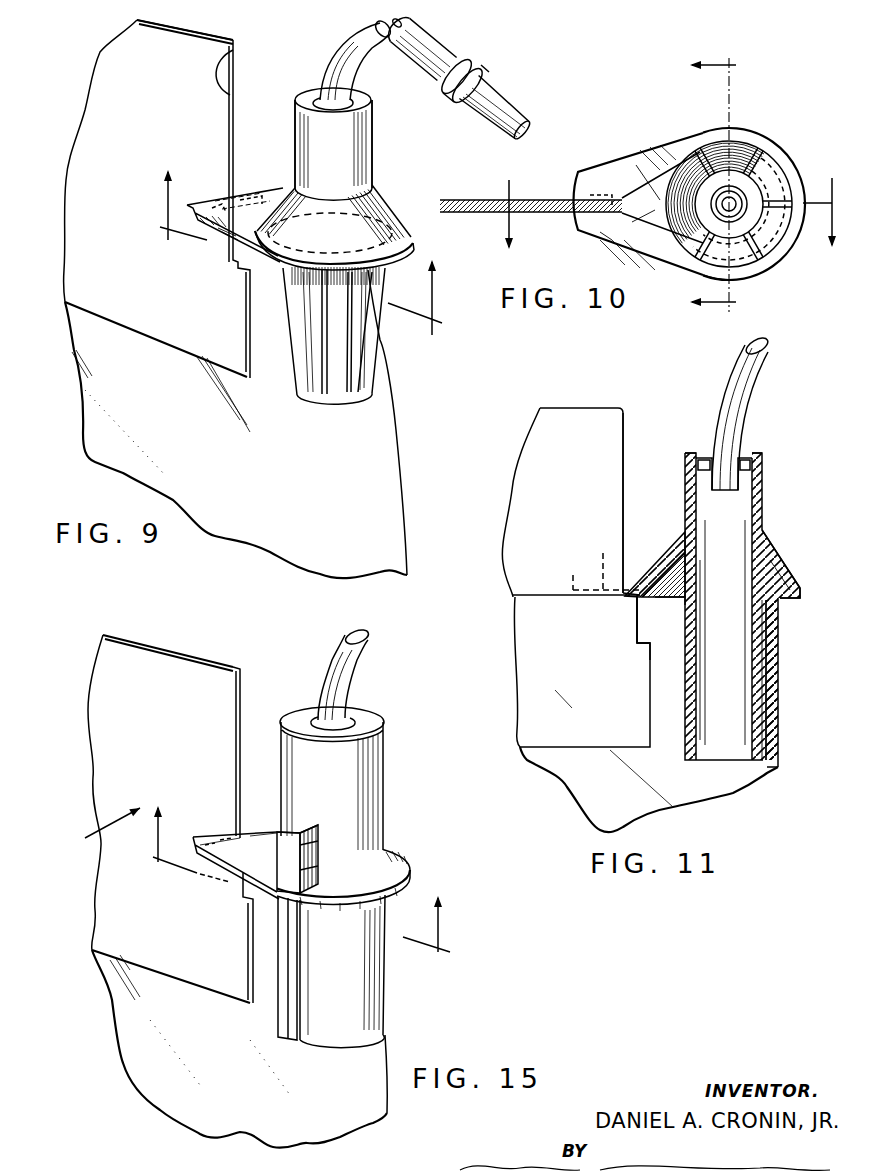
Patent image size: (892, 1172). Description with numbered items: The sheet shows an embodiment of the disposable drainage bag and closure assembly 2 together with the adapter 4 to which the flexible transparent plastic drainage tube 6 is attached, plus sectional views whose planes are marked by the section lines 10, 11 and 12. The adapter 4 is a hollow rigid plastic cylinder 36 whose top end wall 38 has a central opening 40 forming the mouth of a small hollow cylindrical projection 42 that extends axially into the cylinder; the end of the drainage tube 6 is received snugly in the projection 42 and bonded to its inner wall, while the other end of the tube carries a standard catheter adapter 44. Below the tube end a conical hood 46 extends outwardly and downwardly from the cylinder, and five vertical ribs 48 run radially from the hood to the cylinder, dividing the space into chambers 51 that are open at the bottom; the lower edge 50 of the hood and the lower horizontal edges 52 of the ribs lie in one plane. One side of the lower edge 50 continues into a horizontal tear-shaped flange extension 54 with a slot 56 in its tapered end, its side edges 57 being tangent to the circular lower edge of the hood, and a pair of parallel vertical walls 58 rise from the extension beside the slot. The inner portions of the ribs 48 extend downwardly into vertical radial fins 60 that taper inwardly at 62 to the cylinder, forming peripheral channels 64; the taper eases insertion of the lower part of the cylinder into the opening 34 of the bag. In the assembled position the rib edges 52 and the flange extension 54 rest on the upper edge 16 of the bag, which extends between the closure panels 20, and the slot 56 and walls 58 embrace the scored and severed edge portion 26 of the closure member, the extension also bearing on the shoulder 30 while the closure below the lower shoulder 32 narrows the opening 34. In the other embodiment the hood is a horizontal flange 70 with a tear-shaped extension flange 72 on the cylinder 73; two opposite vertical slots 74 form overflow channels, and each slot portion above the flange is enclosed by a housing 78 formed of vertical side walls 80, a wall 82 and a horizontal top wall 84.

In FIG. 9, the disposable drainage bag and closure assembly 2 is at (88, 52).
In FIG. 9, the adapter 4 is at (280, 143).
In FIG. 9, the drainage tube 6 is at (345, 37).
In FIG. 10, the drainage tube 6 is at (742, 200).
In FIG. 11, the drainage tube 6 is at (755, 383).
In FIG. 15, the drainage tube 6 is at (348, 668).
In FIG. 9, the section line 10— 10 is at (304, 258).
In FIG. 10, the section line 10— 10 is at (640, 165).
In FIG. 10, the section line 11— 11 is at (671, 200).
In FIG. 10, the section line 12- 12 is at (728, 182).
In FIG. 9, the upper edge of the bag 16 is at (388, 232).
In FIG. 11, the upper edge of the bag 16 is at (640, 612).
In FIG. 15, the upper edge of the bag 16 is at (269, 892).
In FIG. 9, the closure panels 20 is at (106, 79).
In FIG. 10, the closure panels 20 is at (530, 200).
In FIG. 11, the closure panels 20 is at (636, 595).
In FIG. 15, the closure panels 20 is at (223, 891).
In FIG. 9, the scored and severed edge portion 26 is at (233, 46).
In FIG. 10, the scored and severed edge portion 26 is at (605, 238).
In FIG. 11, the scored and severed edge portion 26 is at (627, 448).
In FIG. 11, the shoulder 30 is at (615, 614).
In FIG. 11, the lower shoulder 32 is at (648, 645).
In FIG. 11, the opening 34 is at (642, 625).
In FIG. 9, the cylinder 36 is at (362, 148).
In FIG. 10, the cylinder 36 is at (729, 204).
In FIG. 11, the cylinder 36 is at (764, 503).
In FIG. 9, the top end wall 38 is at (302, 102).
In FIG. 11, the top end wall 38 is at (748, 457).
In FIG. 15, the top end wall 38 is at (293, 708).
In FIG. 9, the opening 40 is at (355, 100).
In FIG. 11, the opening 40 is at (710, 462).
In FIG. 15, the opening 40 is at (355, 718).
In FIG. 11, the hollow cylindrical projection 42 is at (752, 472).
In FIG. 9, the catheter adapter 44 is at (486, 88).
In FIG. 9, the hood 46 is at (383, 208).
In FIG. 11, the hood 46 is at (765, 563).
In FIG. 10, the vertical ribs 48 is at (748, 265).
In FIG. 11, the vertical ribs 48 is at (782, 585).
In FIG. 9, the lower edge of the hood 50 is at (406, 258).
In FIG. 10, the lower edge of the hood 50 is at (757, 140).
In FIG. 10, the chambers 51 is at (731, 140).
In FIG. 10, the lower horizontal edges of the ribs 52 is at (660, 268).
In FIG. 11, the lower horizontal edges of the ribs 52 is at (798, 602).
In FIG. 9, the flange extension 54 is at (215, 222).
In FIG. 10, the flange extension 54 is at (605, 178).
In FIG. 11, the flange extension 54 is at (640, 583).
In FIG. 9, the slot 56 is at (218, 193).
In FIG. 10, the slot 56 is at (598, 195).
In FIG. 11, the slot 56 is at (603, 578).
In FIG. 15, the slot 56 is at (220, 838).
In FIG. 9, the side edges of the flange extension 57 is at (226, 235).
In FIG. 10, the side edges of the flange extension 57 is at (662, 158).
In FIG. 11, the side edges of the flange extension 57 is at (670, 585).
In FIG. 9, the vertical walls 58 is at (250, 200).
In FIG. 11, the vertical walls 58 is at (660, 560).
In FIG. 9, the fins 60 is at (323, 300).
In FIG. 10, the fins 60 is at (703, 272).
In FIG. 11, the fins 60 is at (780, 658).
In FIG. 9, the taper 62 is at (322, 370).
In FIG. 11, the taper 62 is at (778, 705).
In FIG. 9, the peripheral channels 64 is at (348, 352).
In FIG. 15, the horizontal flange 70 is at (410, 870).
In FIG. 15, the extension flange 72 is at (258, 836).
In FIG. 15, the cylinder 73 is at (370, 768).
In FIG. 15, the vertical slots 74 is at (307, 937).
In FIG. 15, the housing 78 is at (320, 845).
In FIG. 15, the vertical side walls 80 is at (320, 868).
In FIG. 15, the housing wall 82 is at (280, 880).
In FIG. 15, the horizontal top wall 84 is at (303, 830).